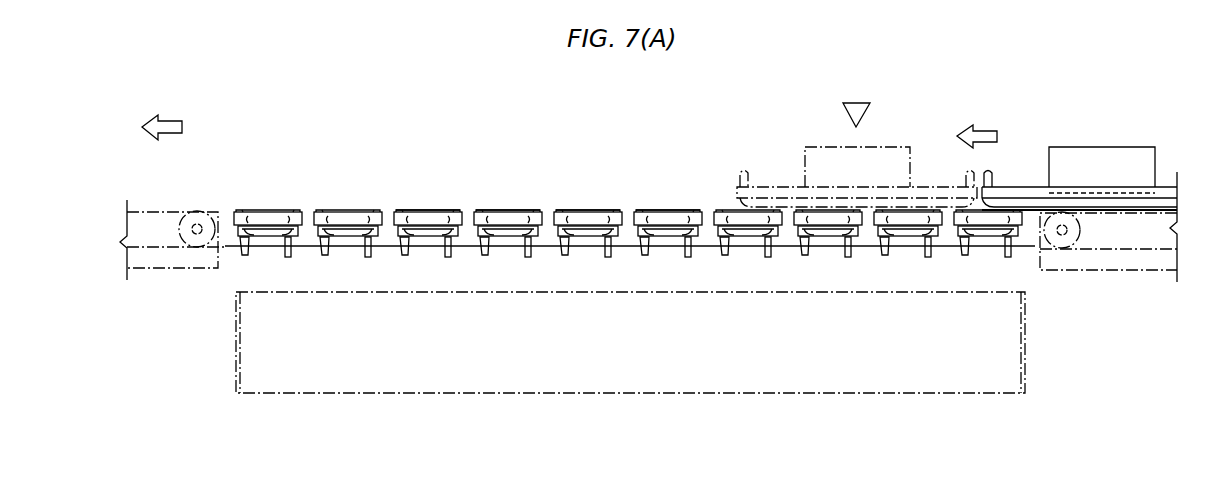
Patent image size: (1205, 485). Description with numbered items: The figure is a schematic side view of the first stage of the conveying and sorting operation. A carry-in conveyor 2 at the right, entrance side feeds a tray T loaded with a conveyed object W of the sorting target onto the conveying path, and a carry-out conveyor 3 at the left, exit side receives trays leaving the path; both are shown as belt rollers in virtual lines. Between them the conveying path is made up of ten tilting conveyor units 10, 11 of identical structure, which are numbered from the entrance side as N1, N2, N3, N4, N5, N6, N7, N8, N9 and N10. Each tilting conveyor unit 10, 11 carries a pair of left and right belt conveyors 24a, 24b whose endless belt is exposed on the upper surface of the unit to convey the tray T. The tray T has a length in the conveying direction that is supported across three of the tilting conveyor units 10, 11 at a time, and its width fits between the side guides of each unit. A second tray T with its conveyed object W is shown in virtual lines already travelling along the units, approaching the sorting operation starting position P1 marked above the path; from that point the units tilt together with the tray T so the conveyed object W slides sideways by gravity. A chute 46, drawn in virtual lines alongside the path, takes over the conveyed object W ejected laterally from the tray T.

The carry-in conveyor 2 is at (1095, 252).
The carry-out conveyor 3 is at (174, 212).
The tilting conveyor unit 10 is at (509, 211).
The tilting conveyor unit 11 is at (427, 211).
The belt conveyor 24a is at (590, 210).
The belt conveyor 24b is at (668, 210).
The chute 46 is at (627, 361).
The tray T is at (930, 193).
The conveyed object W is at (818, 162).
The sorting operation starting position P1 is at (856, 102).
The tilting conveyor unit number one N1 is at (988, 248).
The tilting conveyor unit number two N2 is at (908, 248).
The tilting conveyor unit number three N3 is at (828, 248).
The tilting conveyor unit number four N4 is at (748, 248).
The tilting conveyor unit number five N5 is at (668, 248).
The tilting conveyor unit number six N6 is at (588, 248).
The tilting conveyor unit number seven N7 is at (508, 248).
The tilting conveyor unit number eight N8 is at (428, 248).
The tilting conveyor unit number nine N9 is at (348, 248).
The tilting conveyor unit number ten N10 is at (268, 248).